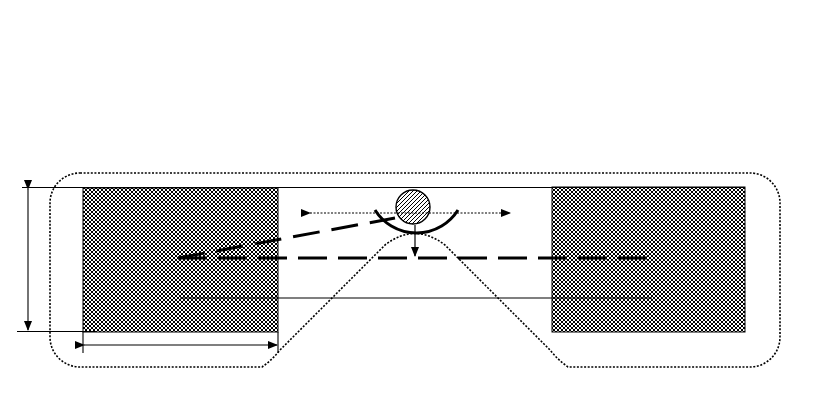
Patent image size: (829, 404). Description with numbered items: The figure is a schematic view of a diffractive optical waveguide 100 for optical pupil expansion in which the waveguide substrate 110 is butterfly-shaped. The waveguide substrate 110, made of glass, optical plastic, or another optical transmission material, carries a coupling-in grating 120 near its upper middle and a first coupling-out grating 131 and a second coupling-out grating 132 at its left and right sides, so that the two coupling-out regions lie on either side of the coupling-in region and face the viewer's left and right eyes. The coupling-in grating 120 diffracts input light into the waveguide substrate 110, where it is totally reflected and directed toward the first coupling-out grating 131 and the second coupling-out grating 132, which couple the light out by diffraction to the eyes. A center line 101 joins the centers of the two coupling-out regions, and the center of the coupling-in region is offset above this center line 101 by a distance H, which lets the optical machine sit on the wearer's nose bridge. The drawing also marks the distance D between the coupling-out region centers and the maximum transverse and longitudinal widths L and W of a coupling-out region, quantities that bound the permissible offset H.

The diffractive optical waveguide 100 is at (408, 66).
The waveguide substrate 110 is at (203, 178).
The coupling-in grating 120 is at (425, 195).
The first coupling-out grating 131 is at (138, 187).
The second coupling-out grating 132 is at (685, 187).
The center line 101 is at (517, 257).